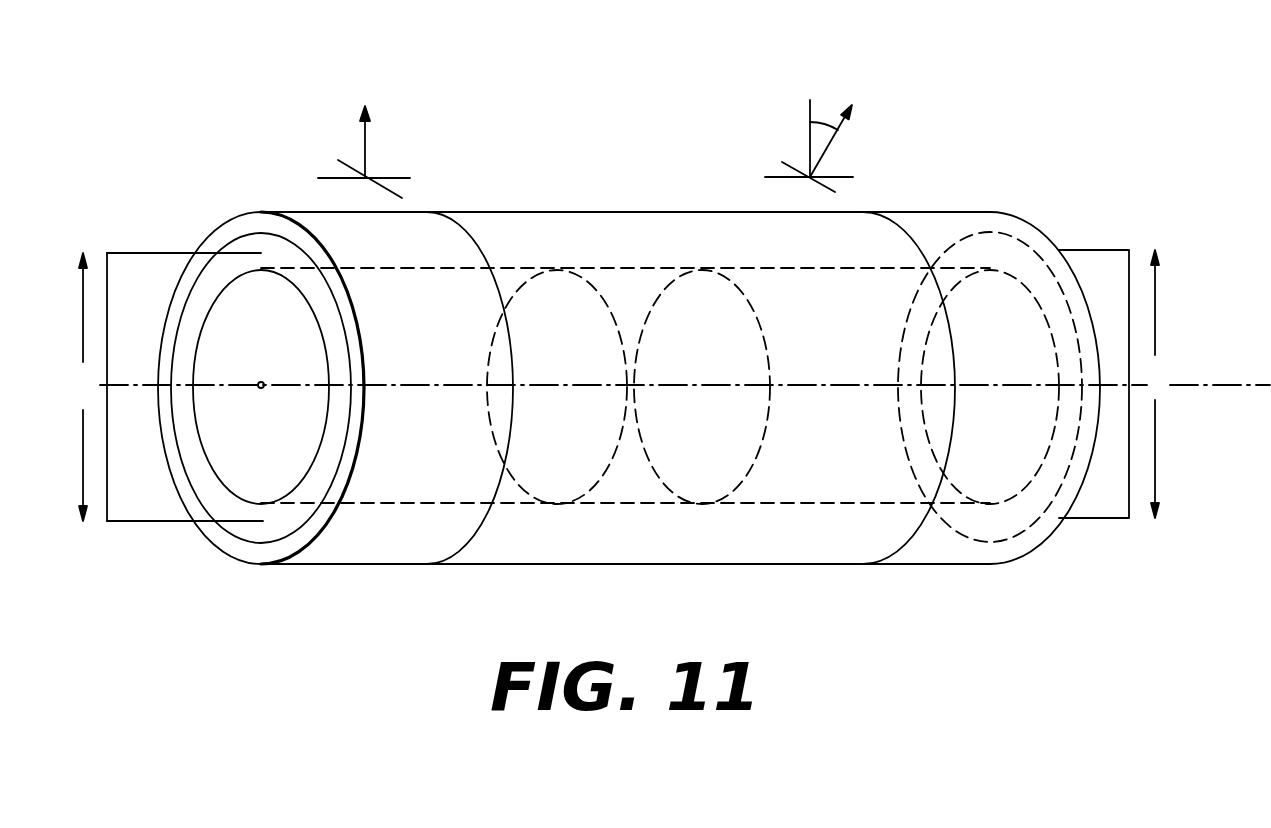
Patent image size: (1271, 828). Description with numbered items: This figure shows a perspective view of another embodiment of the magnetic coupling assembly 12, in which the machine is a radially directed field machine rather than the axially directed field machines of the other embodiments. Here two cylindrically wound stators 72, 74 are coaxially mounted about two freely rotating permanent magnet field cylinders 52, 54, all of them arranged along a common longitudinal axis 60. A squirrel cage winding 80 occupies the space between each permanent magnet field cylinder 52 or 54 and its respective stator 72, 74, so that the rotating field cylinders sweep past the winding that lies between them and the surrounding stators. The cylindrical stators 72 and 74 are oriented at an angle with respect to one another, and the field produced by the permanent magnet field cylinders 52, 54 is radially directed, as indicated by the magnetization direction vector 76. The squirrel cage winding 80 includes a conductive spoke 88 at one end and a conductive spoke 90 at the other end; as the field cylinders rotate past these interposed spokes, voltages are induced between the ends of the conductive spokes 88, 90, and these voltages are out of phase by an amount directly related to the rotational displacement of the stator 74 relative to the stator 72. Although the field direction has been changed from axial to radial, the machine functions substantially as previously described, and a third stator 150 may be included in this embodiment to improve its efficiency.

The magnetic coupling assembly 12 is at (668, 102).
The permanent magnet field cylinder 52 is at (238, 474).
The permanent magnet field cylinder 54 is at (871, 492).
The longitudinal axis 60 is at (1245, 383).
The stator 72 is at (345, 552).
The stator 74 is at (933, 552).
The magnetization direction vector 76 is at (365, 147).
The squirrel cage winding 80 is at (158, 521).
The conductive spoke 88 is at (107, 453).
The conductive spoke 90 is at (1129, 474).
The third stator 150 is at (650, 564).